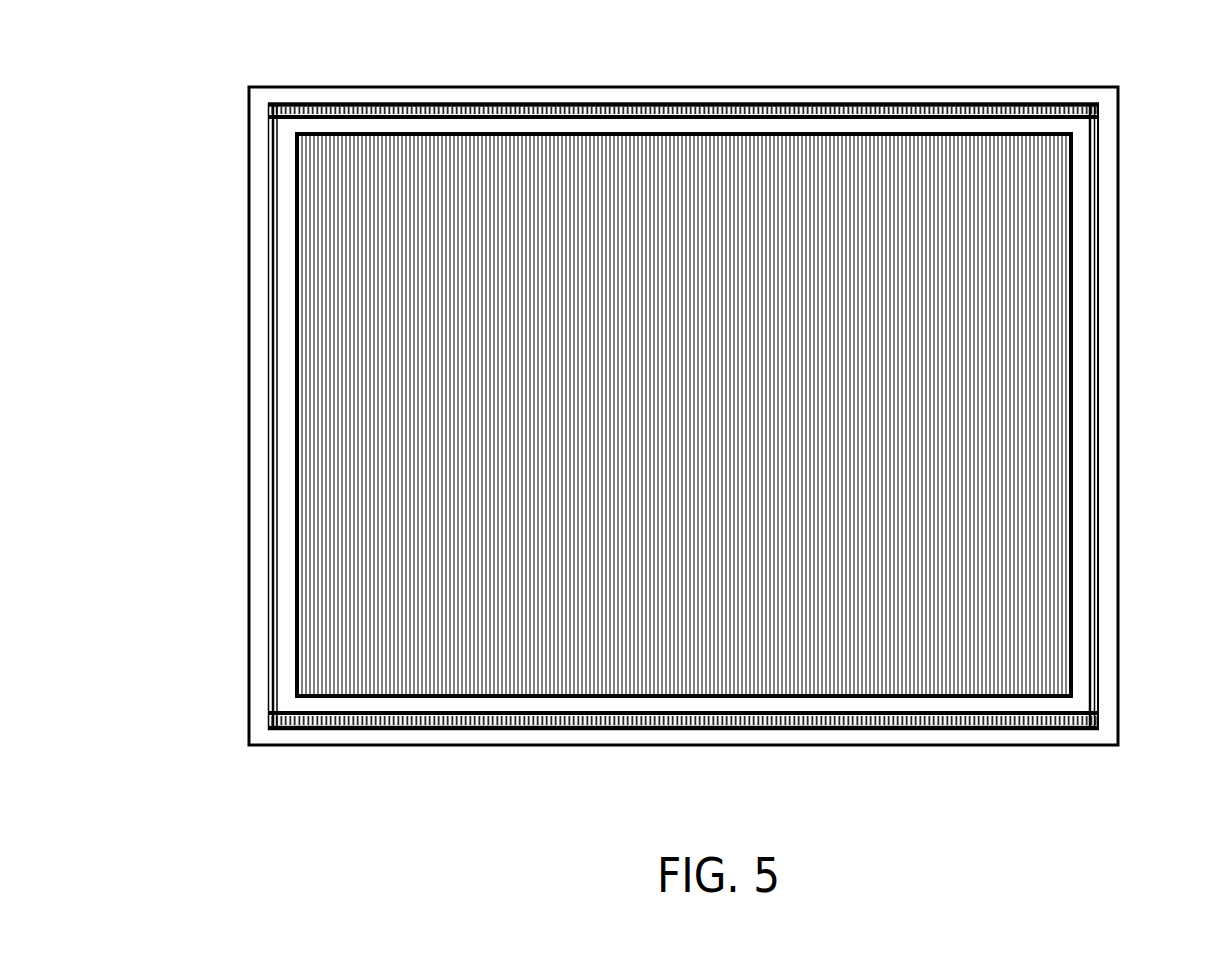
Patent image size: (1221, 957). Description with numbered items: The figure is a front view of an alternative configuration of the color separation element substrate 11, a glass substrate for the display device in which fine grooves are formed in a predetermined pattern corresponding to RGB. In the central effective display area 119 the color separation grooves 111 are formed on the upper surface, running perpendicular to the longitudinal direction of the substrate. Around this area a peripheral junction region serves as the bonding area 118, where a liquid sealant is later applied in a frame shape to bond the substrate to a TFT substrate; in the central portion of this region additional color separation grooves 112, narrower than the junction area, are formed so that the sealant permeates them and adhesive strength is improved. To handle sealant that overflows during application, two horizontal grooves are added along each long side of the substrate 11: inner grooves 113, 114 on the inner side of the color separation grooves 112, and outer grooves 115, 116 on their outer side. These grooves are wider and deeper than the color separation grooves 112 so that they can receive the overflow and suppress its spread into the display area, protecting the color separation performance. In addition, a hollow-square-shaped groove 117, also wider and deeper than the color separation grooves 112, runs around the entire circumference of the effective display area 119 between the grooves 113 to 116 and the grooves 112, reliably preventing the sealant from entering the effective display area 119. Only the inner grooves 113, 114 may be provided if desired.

The color separation element substrate 11 is at (902, 86).
The color separation grooves 111 is at (685, 415).
The color separation grooves 112 is at (1099, 250).
The inner groove 113 is at (700, 111).
The inner groove 114 is at (800, 724).
The outer groove 115 is at (628, 103).
The outer groove 116 is at (722, 731).
The hollow-square-shaped groove 117 is at (1073, 520).
The bonding area 118 is at (1070, 97).
The effective display area 119 is at (318, 221).